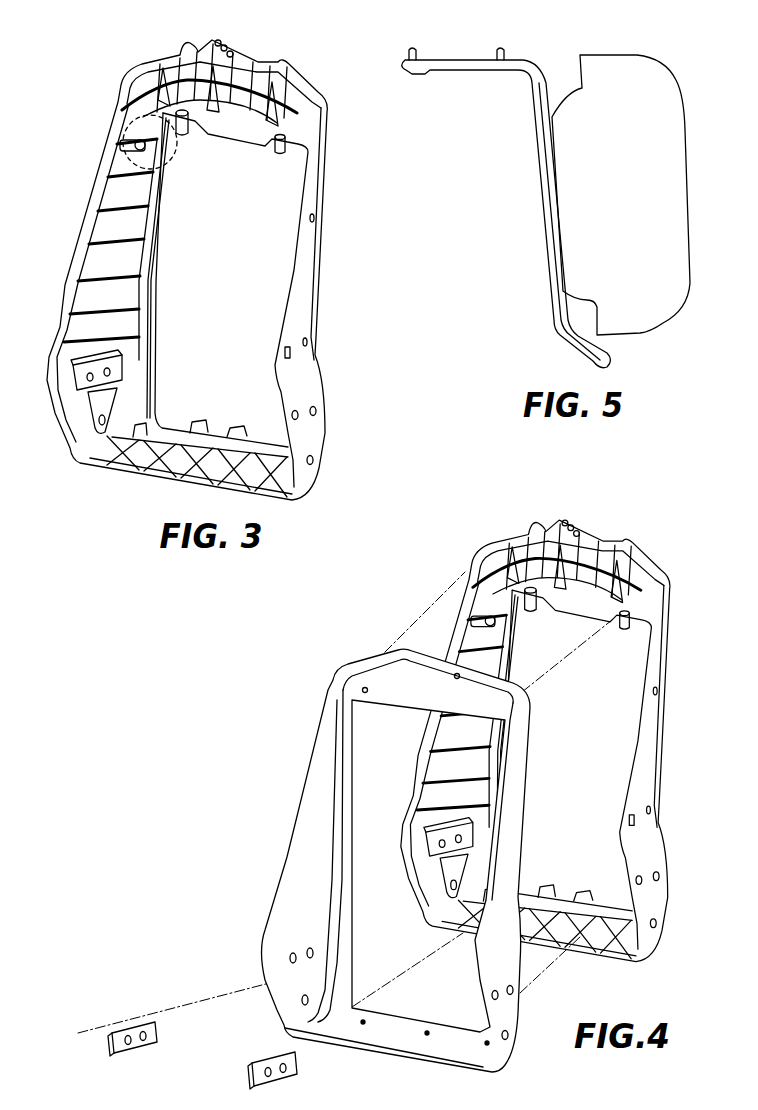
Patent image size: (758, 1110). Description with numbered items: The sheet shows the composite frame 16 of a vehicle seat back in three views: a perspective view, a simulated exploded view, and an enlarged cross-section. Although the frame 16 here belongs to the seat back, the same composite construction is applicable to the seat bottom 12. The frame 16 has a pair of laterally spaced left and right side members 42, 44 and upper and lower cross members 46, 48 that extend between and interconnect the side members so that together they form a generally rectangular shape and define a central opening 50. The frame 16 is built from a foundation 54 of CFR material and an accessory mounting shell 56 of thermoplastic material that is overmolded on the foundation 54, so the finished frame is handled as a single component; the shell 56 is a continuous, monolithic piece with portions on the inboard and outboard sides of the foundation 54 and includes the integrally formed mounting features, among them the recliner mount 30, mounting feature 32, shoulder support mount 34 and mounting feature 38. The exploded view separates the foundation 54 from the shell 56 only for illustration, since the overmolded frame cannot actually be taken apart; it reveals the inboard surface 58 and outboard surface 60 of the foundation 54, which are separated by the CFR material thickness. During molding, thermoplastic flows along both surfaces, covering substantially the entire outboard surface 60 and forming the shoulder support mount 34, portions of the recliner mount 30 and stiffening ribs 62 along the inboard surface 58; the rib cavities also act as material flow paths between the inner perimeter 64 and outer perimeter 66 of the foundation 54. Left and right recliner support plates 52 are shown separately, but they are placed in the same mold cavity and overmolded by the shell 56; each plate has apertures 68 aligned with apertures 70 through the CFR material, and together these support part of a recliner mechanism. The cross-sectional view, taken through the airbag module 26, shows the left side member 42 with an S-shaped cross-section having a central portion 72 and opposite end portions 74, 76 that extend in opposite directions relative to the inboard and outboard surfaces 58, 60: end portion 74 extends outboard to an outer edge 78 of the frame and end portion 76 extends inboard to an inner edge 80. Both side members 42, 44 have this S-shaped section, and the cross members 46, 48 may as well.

In FIG. 3, the seat bottom 12 is at (118, 96).
In FIG. 3, the composite frame 16 is at (326, 102).
In FIG. 4, the composite frame 16 is at (695, 633).
In FIG. 5, the airbag module 26 is at (608, 85).
In FIG. 3, the recliner mount 30 is at (122, 368).
In FIG. 4, the recliner mount 30 is at (443, 843).
In FIG. 3, the mounting feature 32 is at (185, 135).
In FIG. 3, the shoulder support mount 34 is at (142, 160).
In FIG. 4, the shoulder support mount 34 is at (490, 622).
In FIG. 3, the mounting feature 38 is at (292, 353).
In FIG. 3, the left side member 42 is at (288, 305).
In FIG. 5, the left side member 42 is at (526, 70).
In FIG. 3, the right side member 44 is at (77, 241).
In FIG. 3, the upper cross member 46 is at (252, 70).
In FIG. 3, the lower cross member 48 is at (155, 474).
In FIG. 3, the opening 50 is at (286, 197).
In FIG. 3, the recliner support plates 52 is at (80, 395).
In FIG. 4, the recliner support plates 52 is at (157, 1045).
In FIG. 3, the foundation 54 is at (116, 300).
In FIG. 5, the foundation 54 is at (495, 68).
In FIG. 4, the foundation 54 is at (380, 672).
In FIG. 3, the accessory mounting shell 56 is at (313, 292).
In FIG. 5, the accessory mounting shell 56 is at (465, 60).
In FIG. 4, the accessory mounting shell 56 is at (656, 718).
In FIG. 5, the inboard surface 58 is at (538, 177).
In FIG. 4, the inboard surface 58 is at (330, 790).
In FIG. 5, the outboard surface 60 is at (552, 236).
In FIG. 4, the outboard surface 60 is at (507, 842).
In FIG. 3, the stiffening ribs 62 is at (210, 70).
In FIG. 4, the stiffening ribs 62 is at (556, 541).
In FIG. 4, the inner perimeter 64 is at (353, 922).
In FIG. 4, the outer perimeter 66 is at (300, 795).
In FIG. 4, the apertures 68 is at (141, 1032).
In FIG. 4, the apertures 70 is at (311, 952).
In FIG. 5, the central portion 72 is at (544, 213).
In FIG. 5, the end portion 74 is at (567, 338).
In FIG. 5, the end portion 76 is at (460, 72).
In FIG. 3, the outer edge 78 is at (98, 178).
In FIG. 5, the outer edge 78 is at (610, 362).
In FIG. 3, the inner edge 80 is at (152, 272).
In FIG. 5, the inner edge 80 is at (398, 68).